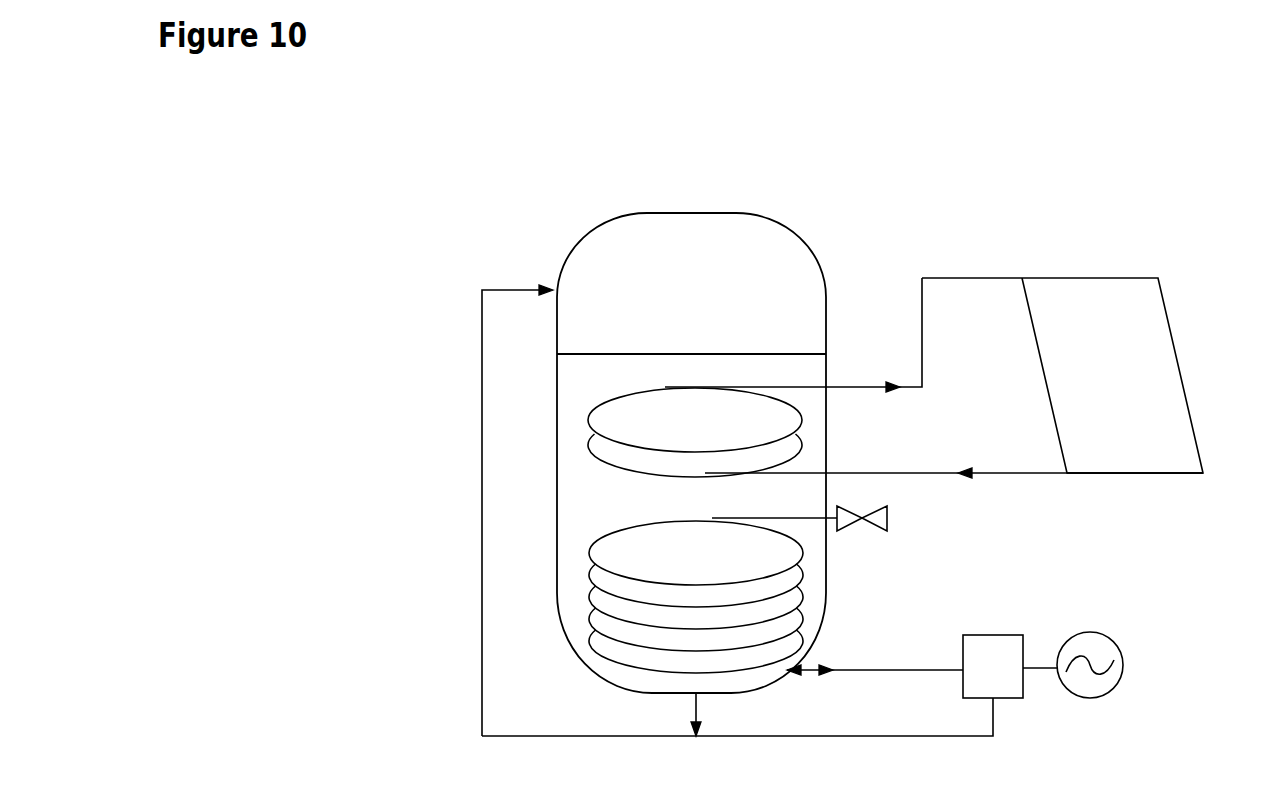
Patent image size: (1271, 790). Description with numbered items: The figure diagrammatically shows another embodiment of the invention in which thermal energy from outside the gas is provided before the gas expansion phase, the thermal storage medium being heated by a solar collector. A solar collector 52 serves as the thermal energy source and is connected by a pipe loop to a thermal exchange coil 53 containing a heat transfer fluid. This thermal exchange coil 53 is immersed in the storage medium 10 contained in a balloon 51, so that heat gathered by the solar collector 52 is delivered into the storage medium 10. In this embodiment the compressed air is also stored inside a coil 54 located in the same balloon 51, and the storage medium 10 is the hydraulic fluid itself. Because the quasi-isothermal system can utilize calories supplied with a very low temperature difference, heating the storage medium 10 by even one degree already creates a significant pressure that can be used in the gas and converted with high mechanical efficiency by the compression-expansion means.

The storage medium 10 is at (794, 453).
The balloon 51 is at (767, 218).
The solar collector 52 is at (1122, 272).
The thermal exchange coil 53 is at (590, 407).
The coil 54 is at (580, 632).